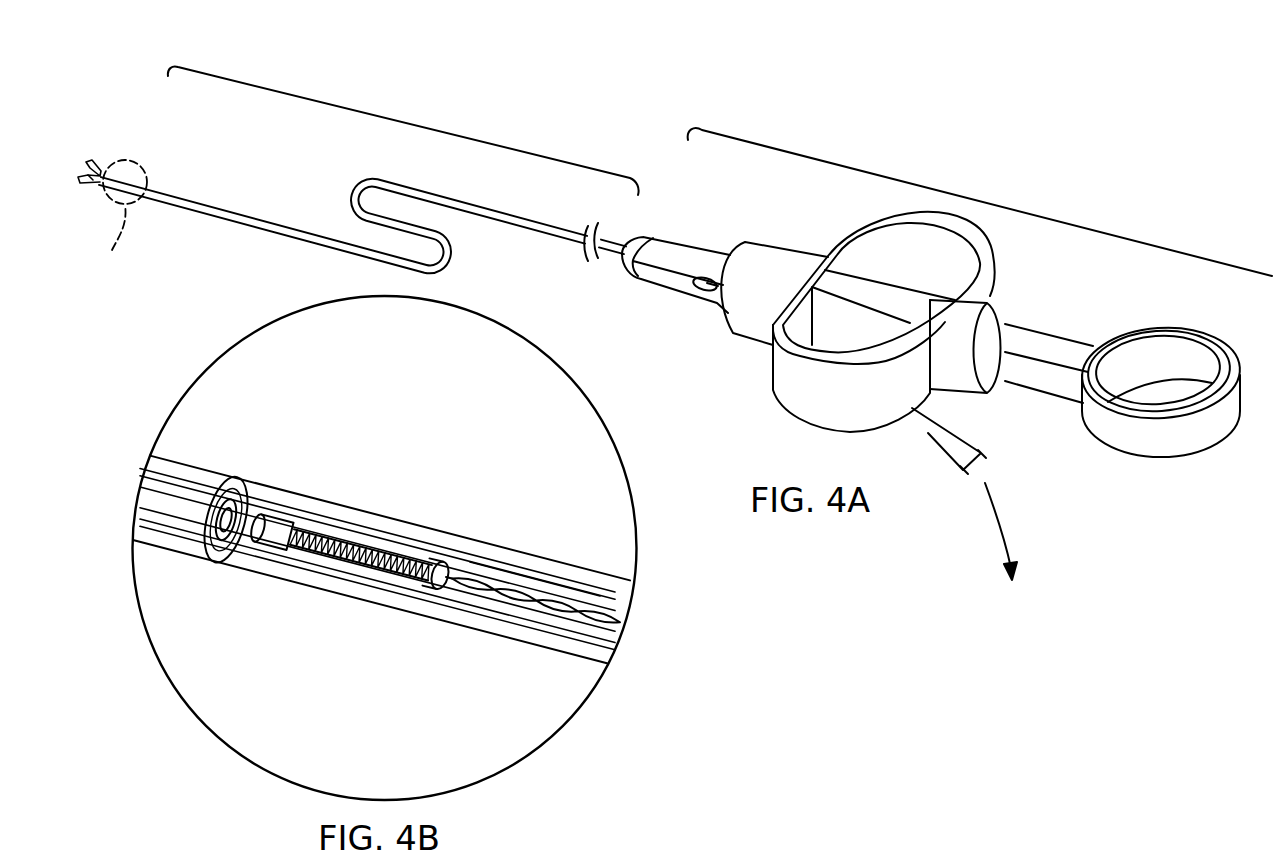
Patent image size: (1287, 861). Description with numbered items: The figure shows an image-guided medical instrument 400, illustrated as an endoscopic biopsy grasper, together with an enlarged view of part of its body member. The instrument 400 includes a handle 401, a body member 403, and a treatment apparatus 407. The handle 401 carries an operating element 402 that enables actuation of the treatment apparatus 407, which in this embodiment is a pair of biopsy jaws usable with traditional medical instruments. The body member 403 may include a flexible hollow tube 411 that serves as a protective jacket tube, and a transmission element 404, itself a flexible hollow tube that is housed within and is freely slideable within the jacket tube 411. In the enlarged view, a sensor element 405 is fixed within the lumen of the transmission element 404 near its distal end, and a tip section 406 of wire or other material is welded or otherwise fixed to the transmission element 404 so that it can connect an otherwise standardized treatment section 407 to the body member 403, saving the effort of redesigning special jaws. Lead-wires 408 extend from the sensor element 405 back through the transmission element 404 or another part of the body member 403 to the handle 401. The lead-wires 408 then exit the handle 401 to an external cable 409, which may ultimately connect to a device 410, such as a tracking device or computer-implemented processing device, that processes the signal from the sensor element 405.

In FIG. 4A, the image-guided medical instrument 400 is at (663, 316).
In FIG. 4A, the handle 401 is at (978, 198).
In FIG. 4A, the operating element 402 is at (1183, 330).
In FIG. 4A, the body member 403 is at (397, 119).
In FIG. 4A, the transmission element 404 is at (712, 290).
In FIG. 4B, the transmission element 404 is at (548, 588).
In FIG. 4B, the sensor element 405 is at (360, 565).
In FIG. 4B, the tip section 406 is at (190, 507).
In FIG. 4A, the treatment apparatus 407 is at (95, 162).
In FIG. 4B, the lead-wires 408 is at (560, 618).
In FIG. 4A, the external cable 409 is at (944, 448).
In FIG. 4A, the device 410 is at (1003, 525).
In FIG. 4A, the flexible hollow tube 411 is at (515, 234).
In FIG. 4B, the flexible hollow tube 411 is at (527, 553).